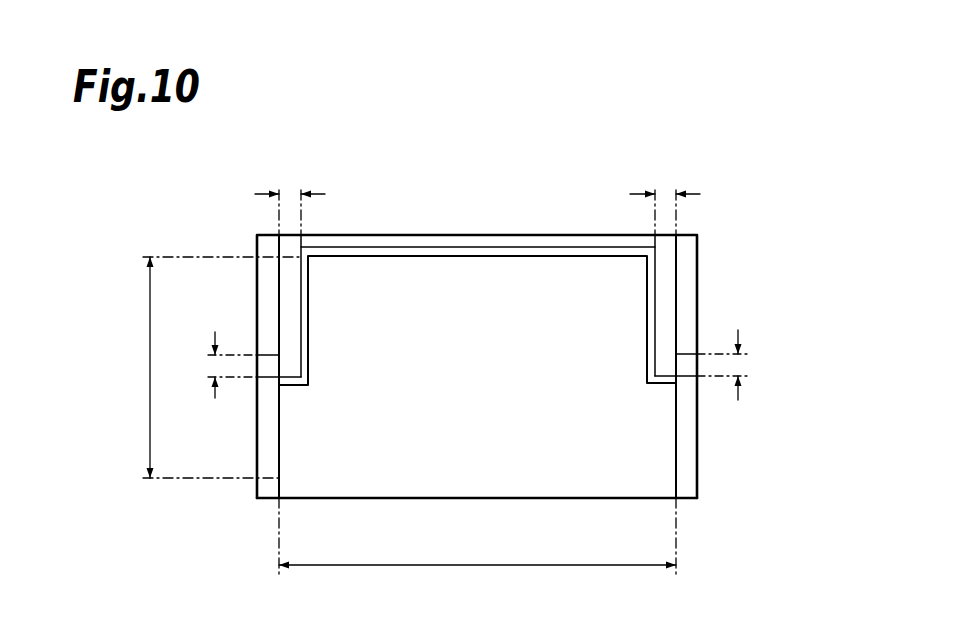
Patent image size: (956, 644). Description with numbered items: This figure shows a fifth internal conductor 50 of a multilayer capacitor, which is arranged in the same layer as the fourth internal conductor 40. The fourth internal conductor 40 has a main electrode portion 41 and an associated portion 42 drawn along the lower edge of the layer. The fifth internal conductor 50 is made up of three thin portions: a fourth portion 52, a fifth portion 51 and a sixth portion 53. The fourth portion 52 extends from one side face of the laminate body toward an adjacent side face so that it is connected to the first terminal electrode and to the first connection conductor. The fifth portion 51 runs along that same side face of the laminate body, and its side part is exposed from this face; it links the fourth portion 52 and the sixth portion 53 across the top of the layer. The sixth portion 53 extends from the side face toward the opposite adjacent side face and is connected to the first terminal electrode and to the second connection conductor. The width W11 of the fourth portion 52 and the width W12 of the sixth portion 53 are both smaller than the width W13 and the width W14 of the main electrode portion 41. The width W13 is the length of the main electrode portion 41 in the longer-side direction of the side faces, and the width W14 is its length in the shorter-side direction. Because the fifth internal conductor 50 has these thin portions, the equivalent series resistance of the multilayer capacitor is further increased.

The fourth internal conductor 40 is at (526, 394).
The main electrode portion 41 is at (497, 402).
The bottom portion of frame 42 is at (496, 483).
The fifth internal conductor 50 is at (485, 274).
The fifth portion 51 is at (487, 245).
The fourth portion 52 is at (288, 293).
The sixth portion 53 is at (668, 287).
The width of fourth portion W11 is at (288, 191).
The width of sixth portion W12 is at (668, 191).
The width of main electrode portion W13 is at (460, 567).
The width of main electrode portion W14 is at (148, 366).